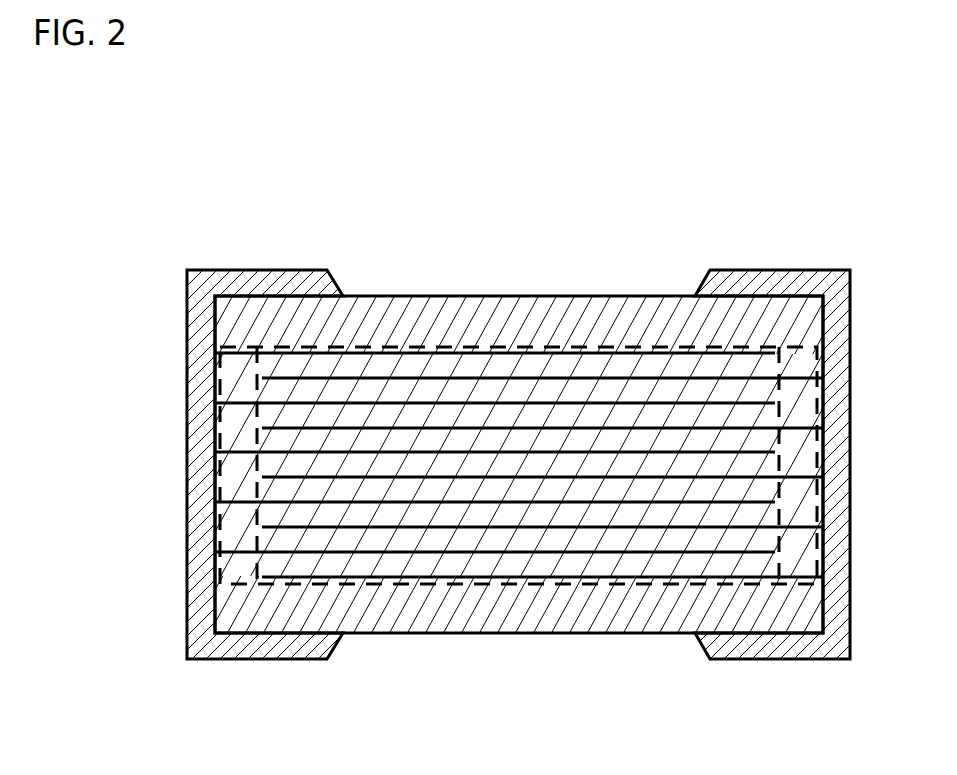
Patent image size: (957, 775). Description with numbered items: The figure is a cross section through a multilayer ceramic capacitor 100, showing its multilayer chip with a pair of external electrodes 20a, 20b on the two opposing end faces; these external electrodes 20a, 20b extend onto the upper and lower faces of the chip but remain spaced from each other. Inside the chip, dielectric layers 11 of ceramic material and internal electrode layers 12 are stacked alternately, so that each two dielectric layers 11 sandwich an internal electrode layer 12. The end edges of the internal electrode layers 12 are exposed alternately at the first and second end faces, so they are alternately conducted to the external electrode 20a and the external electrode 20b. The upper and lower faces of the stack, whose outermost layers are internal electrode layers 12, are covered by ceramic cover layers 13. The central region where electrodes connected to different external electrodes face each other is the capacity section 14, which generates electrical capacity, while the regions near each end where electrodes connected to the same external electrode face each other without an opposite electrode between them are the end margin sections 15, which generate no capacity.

The multilayer ceramic capacitor 100 is at (764, 196).
The dielectric layer 11 is at (680, 563).
The internal electrode layer 12 is at (547, 527).
The cover layer 13 is at (411, 315).
The capacity section 14 is at (543, 345).
The end margin section 15 is at (241, 343).
The external electrode 20a is at (213, 268).
The external electrode 20b is at (814, 270).